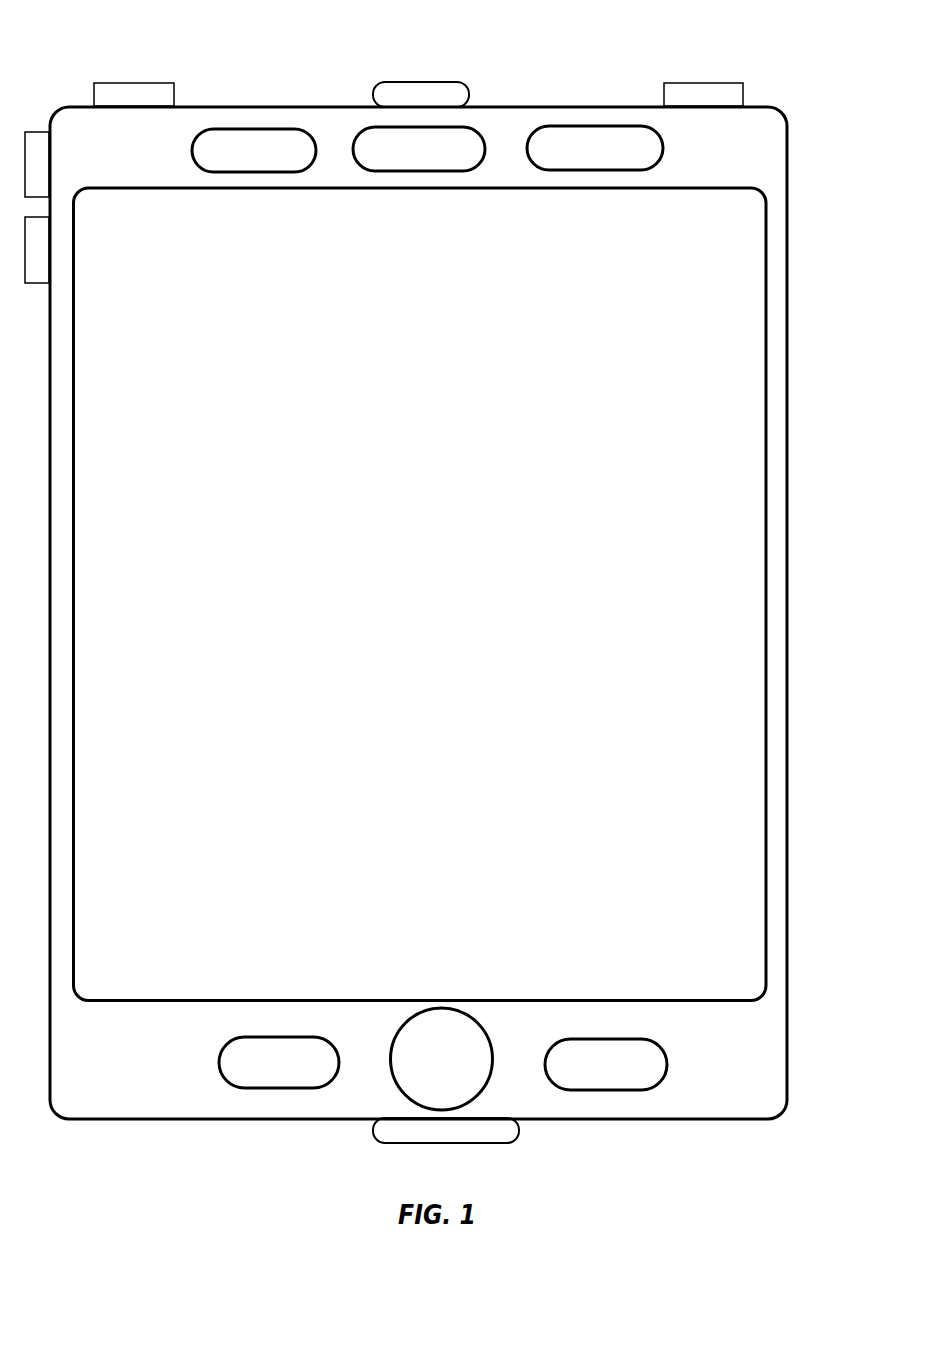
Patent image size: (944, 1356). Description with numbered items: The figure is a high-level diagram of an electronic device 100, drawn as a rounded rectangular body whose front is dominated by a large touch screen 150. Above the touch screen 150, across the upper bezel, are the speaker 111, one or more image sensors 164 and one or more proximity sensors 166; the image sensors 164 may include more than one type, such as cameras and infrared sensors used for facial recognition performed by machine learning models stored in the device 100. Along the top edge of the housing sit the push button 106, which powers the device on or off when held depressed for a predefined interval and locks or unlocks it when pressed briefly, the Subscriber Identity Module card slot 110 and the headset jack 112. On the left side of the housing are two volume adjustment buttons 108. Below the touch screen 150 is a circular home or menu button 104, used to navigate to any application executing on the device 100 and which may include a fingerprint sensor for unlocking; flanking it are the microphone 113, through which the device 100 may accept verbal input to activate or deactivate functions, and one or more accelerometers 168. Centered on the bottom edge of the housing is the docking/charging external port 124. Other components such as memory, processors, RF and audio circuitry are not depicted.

The electronic device 100 is at (825, 107).
The menu button 104 is at (442, 1059).
The push button 106 is at (134, 94).
The volume adjustment buttons 108 is at (37, 207).
The Subscriber Identity Module (SIM) card slot 110 is at (421, 94).
The speaker 111 is at (254, 150).
The headset jack 112 is at (703, 94).
The microphone 113 is at (279, 1062).
The docking/charging external port 124 is at (446, 1130).
The touch screen 150 is at (768, 487).
The image sensors 164 is at (419, 149).
The proximity sensors 166 is at (595, 148).
The accelerometers 168 is at (606, 1064).